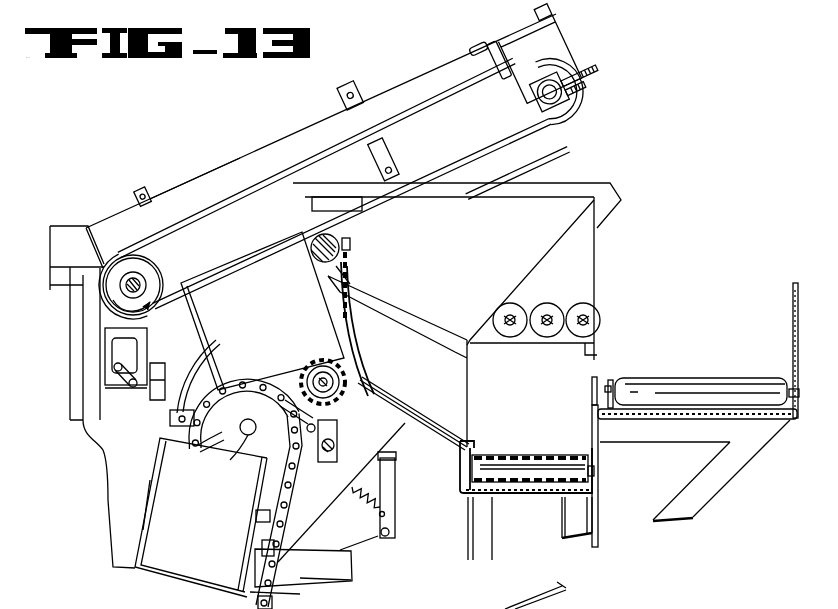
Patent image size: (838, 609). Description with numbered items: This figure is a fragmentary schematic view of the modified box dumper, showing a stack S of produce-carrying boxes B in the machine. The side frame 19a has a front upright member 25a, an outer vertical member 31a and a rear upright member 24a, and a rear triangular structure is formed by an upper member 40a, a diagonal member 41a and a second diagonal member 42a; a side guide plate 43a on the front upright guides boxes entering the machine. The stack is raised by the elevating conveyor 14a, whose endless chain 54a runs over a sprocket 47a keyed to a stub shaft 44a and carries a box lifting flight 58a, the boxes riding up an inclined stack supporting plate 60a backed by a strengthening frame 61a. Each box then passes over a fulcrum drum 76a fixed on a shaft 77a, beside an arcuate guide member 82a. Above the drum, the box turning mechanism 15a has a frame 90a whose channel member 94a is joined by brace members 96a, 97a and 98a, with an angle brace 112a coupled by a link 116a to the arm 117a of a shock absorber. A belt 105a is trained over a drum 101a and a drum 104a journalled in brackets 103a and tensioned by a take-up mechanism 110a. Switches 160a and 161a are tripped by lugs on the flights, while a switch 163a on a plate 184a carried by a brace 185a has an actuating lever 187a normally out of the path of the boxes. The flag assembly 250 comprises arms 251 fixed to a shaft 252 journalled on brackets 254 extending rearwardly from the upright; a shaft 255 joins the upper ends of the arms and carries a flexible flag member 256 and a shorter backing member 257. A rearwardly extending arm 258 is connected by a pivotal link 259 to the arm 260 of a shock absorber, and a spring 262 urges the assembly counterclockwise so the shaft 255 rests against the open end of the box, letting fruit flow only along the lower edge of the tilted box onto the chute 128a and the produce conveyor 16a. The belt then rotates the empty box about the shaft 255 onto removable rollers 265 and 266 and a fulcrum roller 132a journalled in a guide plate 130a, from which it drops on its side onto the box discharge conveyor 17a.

The side frame 19a is at (62, 232).
The brace member 96a is at (148, 194).
The frame 90a is at (212, 176).
The angle brace 112a is at (340, 99).
The box turning mechanism 15a is at (384, 98).
The channel member 94a is at (437, 72).
The brace member 97a is at (487, 44).
The brace member 98a is at (552, 15).
The bracket 103a is at (562, 54).
The take-up mechanism 110a is at (598, 72).
The drum 104a is at (577, 108).
The belt 105a is at (495, 84).
The link 116a is at (385, 150).
The arm 117a is at (314, 205).
The upper member 40a is at (556, 184).
The drum 101a is at (116, 273).
The vertical member 31a is at (77, 307).
The upright member 25a is at (90, 328).
The plate 184a is at (110, 346).
The switch 163a is at (117, 358).
The switch actuating lever 187a is at (124, 382).
The brace 185a is at (161, 367).
The arcuate guide member 82a is at (198, 356).
The fulcrum drum 76a is at (321, 362).
The switch 160a is at (170, 415).
The switch 161a is at (306, 426).
The side guide plate 43a is at (106, 458).
The sprocket 47a is at (221, 434).
The stub shaft 44a is at (245, 436).
The bracket 254 is at (266, 484).
The stack supporting plate 60a is at (258, 516).
The strengthening frame 61a is at (250, 549).
The box lifting flight 58a is at (262, 600).
The shaft 255 is at (345, 240).
The backing member 257 is at (352, 252).
The flag assembly 250 is at (358, 265).
The arm 251 is at (352, 276).
The second diagonal member 42a is at (432, 314).
The flag member 256 is at (364, 368).
The roller 265 is at (513, 338).
The roller 266 is at (544, 338).
The fulcrum roller 132a is at (593, 313).
The guide plate 130a is at (533, 278).
The box discharge conveyor 17a is at (708, 382).
The chute 128a is at (437, 406).
The produce conveyor 16a is at (606, 472).
The shaft 77a is at (337, 402).
The shaft 252 is at (388, 436).
The arm 258 is at (390, 452).
The pivotal link 259 is at (396, 482).
The spring 262 is at (381, 503).
The arm 260 is at (389, 533).
The diagonal member 41a is at (321, 511).
The elevating conveyor 14a is at (348, 557).
The endless chain 54a is at (352, 582).
The upright member 24a is at (293, 591).
The stack S is at (130, 522).
The box B is at (239, 414).